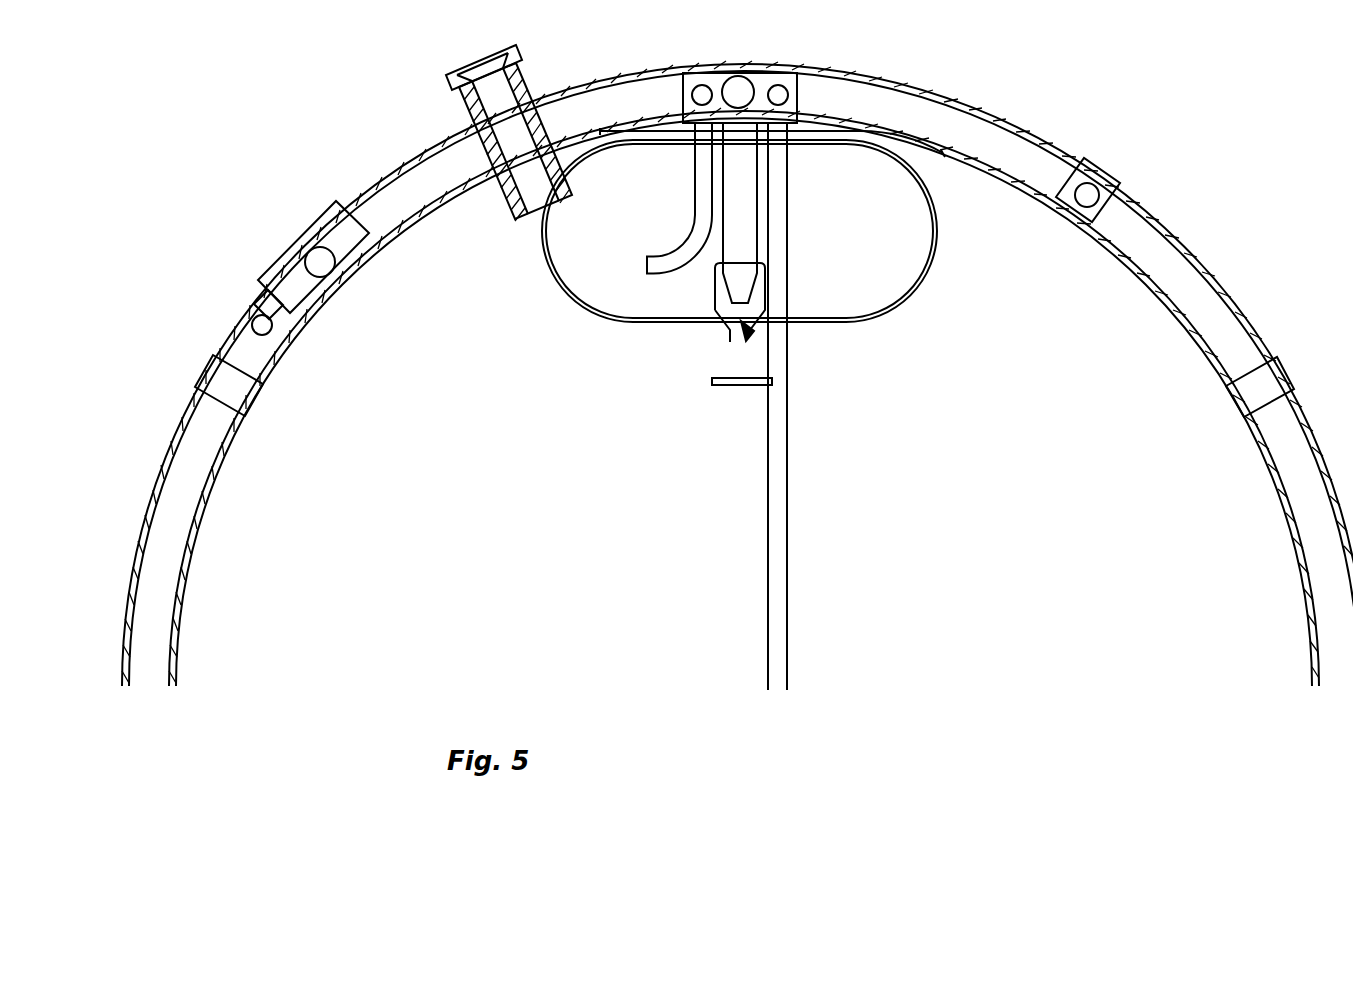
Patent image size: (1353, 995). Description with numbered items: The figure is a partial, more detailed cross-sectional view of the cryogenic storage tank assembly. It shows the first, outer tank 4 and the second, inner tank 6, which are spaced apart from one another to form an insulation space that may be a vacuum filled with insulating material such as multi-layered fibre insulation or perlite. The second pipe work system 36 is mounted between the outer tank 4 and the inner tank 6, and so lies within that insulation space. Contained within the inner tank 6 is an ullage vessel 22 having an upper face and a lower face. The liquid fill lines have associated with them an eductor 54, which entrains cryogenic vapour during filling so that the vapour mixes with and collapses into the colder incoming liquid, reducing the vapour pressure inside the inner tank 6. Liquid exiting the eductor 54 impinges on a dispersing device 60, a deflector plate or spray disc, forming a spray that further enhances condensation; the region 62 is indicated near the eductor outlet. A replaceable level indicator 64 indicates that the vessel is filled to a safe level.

The first, outer tank 4 is at (160, 462).
The second, inner tank 6 is at (210, 483).
The ullage vessel 22 is at (927, 282).
The second pipe work system 36 is at (1026, 165).
The eductor 54 is at (727, 308).
The dispersing device 60 is at (765, 382).
The nozzle outlet 62 is at (748, 338).
The level indicator 64 is at (508, 190).